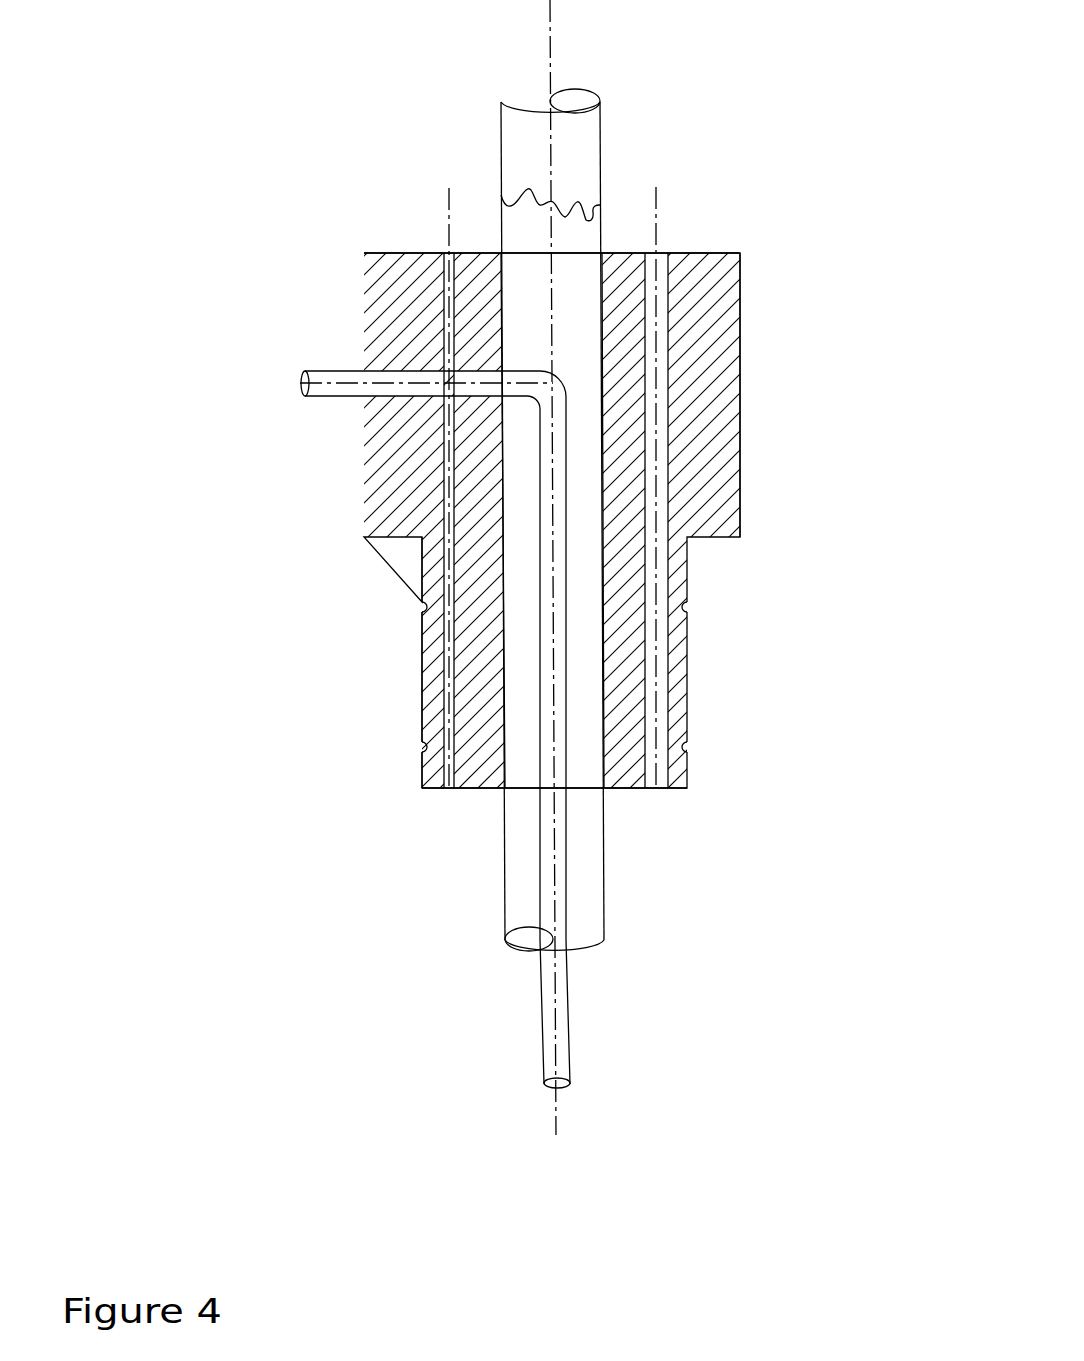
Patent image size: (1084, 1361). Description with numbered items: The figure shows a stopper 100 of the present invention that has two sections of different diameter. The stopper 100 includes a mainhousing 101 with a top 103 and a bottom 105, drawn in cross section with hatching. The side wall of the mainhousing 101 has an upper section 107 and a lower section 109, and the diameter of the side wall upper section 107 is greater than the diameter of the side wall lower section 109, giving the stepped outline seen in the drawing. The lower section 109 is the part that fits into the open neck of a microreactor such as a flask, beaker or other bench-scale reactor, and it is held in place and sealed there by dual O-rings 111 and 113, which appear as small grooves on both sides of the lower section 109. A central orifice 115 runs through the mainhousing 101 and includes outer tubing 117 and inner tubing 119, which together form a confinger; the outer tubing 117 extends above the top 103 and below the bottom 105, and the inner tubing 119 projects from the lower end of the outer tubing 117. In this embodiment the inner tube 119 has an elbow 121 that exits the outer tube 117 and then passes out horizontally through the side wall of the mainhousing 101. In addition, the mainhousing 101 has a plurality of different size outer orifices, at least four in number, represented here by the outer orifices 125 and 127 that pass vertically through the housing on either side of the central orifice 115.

The stopper 100 is at (653, 506).
The mainhousing 101 is at (542, 520).
The top 103 is at (601, 225).
The bottom 105 is at (620, 800).
The side wall upper section 107 is at (809, 395).
The side wall lower section 109 is at (338, 662).
The O-ring 111 is at (471, 586).
The O-ring 113 is at (471, 784).
The central orifice 115 is at (649, 464).
The outer tubing 117 is at (472, 520).
The inner tubing 119 is at (474, 1014).
The elbow 121 is at (373, 631).
The outer orifice 125 is at (370, 488).
The outer orifice 127 is at (722, 530).